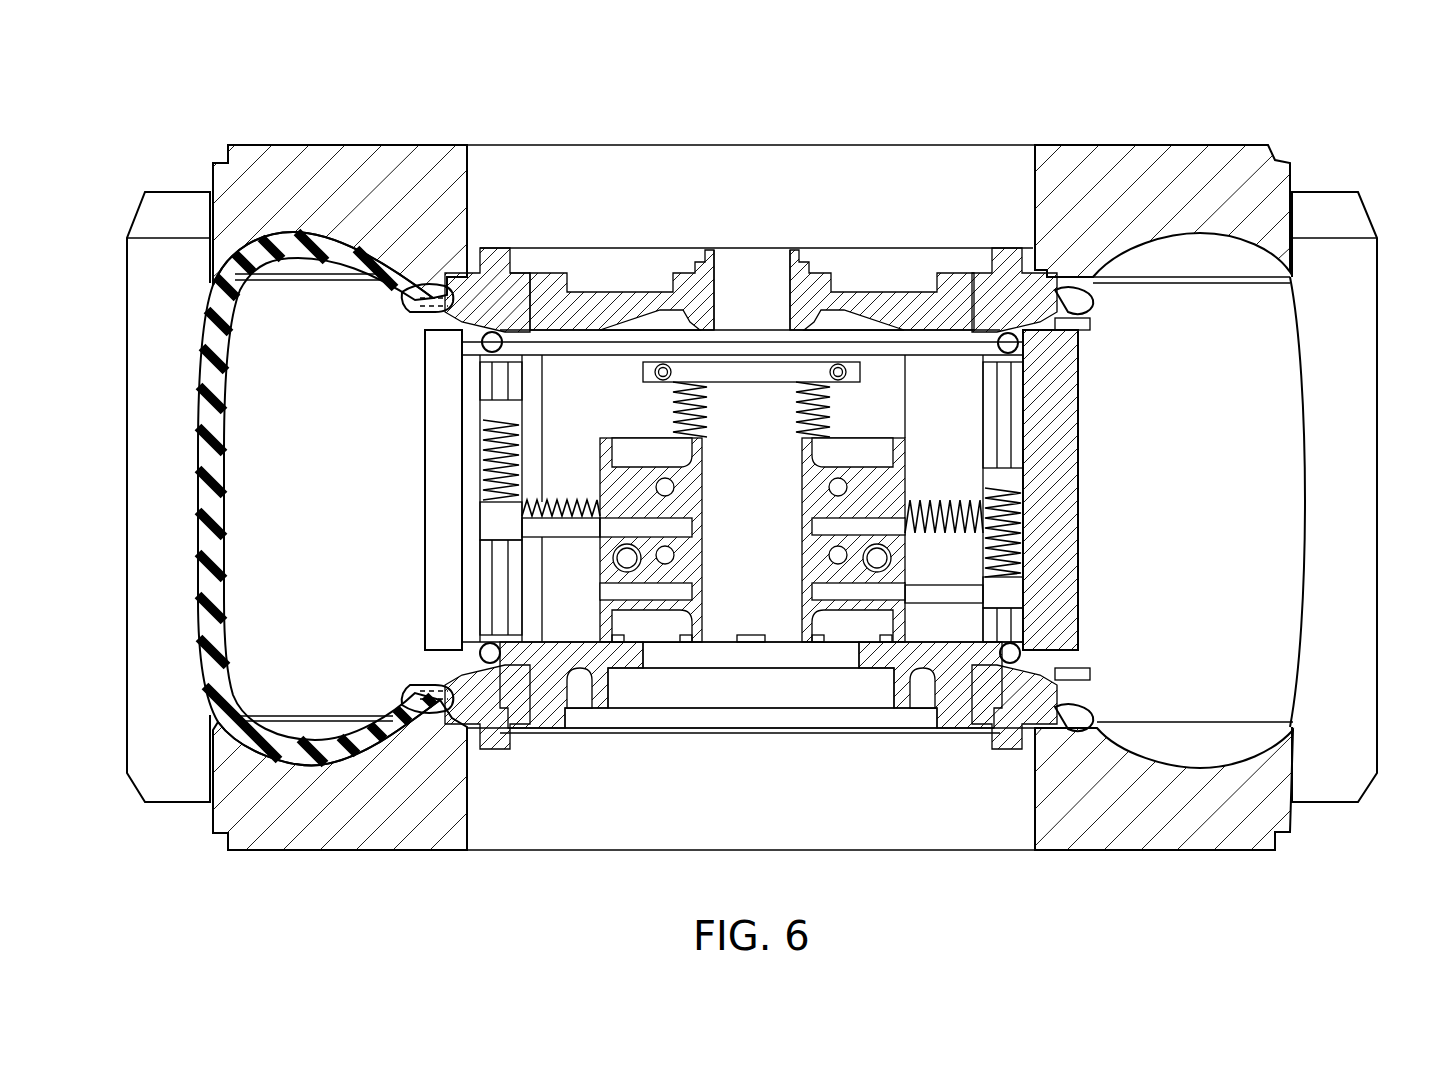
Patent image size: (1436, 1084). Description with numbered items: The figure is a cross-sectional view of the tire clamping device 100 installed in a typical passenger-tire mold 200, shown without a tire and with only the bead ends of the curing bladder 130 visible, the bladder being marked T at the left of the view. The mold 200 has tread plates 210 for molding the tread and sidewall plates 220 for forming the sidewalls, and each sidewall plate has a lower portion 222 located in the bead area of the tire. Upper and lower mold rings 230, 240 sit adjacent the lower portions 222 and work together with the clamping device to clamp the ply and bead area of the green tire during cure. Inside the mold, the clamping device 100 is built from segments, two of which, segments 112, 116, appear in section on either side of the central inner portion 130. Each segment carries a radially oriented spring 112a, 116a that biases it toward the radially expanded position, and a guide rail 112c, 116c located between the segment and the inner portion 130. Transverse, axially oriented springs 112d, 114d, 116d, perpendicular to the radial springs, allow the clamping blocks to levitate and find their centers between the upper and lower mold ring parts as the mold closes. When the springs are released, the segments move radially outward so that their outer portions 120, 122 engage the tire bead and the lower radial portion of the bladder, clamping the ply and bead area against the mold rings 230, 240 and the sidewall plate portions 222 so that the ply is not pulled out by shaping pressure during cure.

The mold 200 is at (1271, 135).
The tread plates 210 is at (135, 420).
The sidewall plates 220 is at (283, 156).
The tire / seal T is at (205, 383).
The upper mold ring 230 is at (497, 262).
The lower portion of sidewall plate 222 is at (425, 285).
The curing bladder / inner portion 130 is at (1085, 328).
The outer portion 122 is at (432, 330).
The tire clamping device 100 is at (425, 470).
The segment 112 is at (432, 548).
The axially oriented spring 112d is at (522, 437).
The radially oriented spring 112a is at (562, 500).
The guide rail 112c is at (568, 530).
The axially oriented spring 114d is at (800, 412).
The radially oriented spring 116a is at (928, 500).
The guide rail 116c is at (943, 595).
The axially oriented spring 116d is at (1012, 528).
The segment 116 is at (1075, 548).
The outer portion 120 is at (440, 667).
The lower mold ring 240 is at (522, 718).